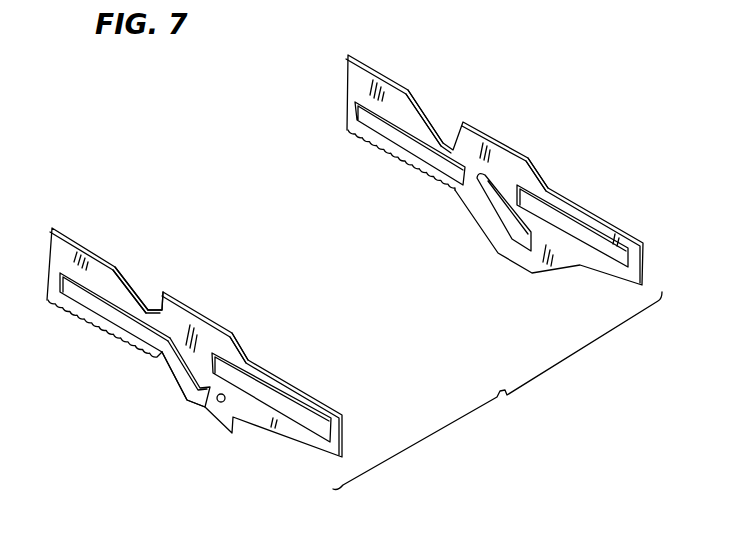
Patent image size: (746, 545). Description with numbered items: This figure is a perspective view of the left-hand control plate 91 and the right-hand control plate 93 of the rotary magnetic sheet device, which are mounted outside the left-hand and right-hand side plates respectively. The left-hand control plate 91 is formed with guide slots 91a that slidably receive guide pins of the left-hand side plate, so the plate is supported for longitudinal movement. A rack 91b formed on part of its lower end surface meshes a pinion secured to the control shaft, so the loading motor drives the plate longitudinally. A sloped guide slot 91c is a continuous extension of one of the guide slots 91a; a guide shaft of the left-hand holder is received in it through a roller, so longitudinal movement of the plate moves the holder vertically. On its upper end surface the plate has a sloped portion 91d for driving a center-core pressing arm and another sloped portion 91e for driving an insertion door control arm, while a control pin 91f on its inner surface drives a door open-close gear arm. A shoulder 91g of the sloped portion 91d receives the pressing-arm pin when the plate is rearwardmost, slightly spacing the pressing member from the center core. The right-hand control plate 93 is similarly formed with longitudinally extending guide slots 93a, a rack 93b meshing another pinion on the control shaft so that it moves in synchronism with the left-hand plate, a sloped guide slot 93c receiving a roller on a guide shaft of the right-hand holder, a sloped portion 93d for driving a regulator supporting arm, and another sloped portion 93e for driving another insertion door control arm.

The left-hand control plate 91 is at (97, 243).
The guide slots 91a is at (87, 298).
The rack 91b is at (113, 338).
The sloped guide slot 91c is at (182, 373).
The sloped portion 91d is at (131, 281).
The sloped portion 91e is at (240, 346).
The control pin 91f is at (220, 403).
The shoulder 91g is at (155, 298).
The right-hand control plate 93 is at (393, 72).
The guide slots 93a is at (388, 125).
The rack 93b is at (420, 175).
The sloped guide slot 93c is at (497, 210).
The sloped portion 93d is at (425, 110).
The sloped portion 93e is at (543, 164).